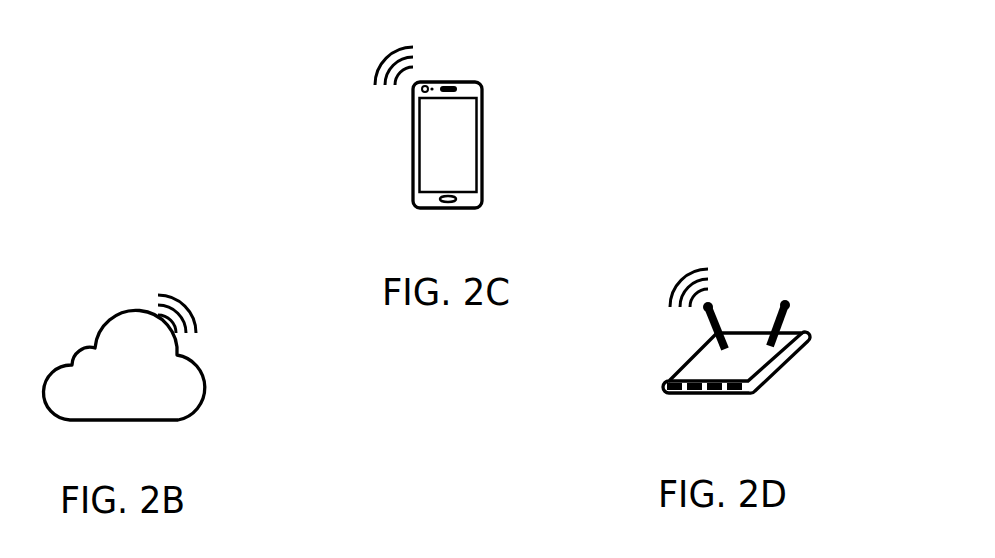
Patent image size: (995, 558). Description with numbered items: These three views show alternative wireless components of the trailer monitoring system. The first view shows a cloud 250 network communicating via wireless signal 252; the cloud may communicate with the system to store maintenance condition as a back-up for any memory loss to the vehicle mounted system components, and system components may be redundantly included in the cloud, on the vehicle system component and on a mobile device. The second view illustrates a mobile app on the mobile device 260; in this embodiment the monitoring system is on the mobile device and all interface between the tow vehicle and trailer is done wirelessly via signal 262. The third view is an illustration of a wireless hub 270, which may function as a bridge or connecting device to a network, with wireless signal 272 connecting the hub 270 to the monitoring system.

In FIG. 2B, the cloud network 250 is at (172, 388).
In FIG. 2B, the wireless signal 252 is at (180, 294).
In FIG. 2C, the mobile device 260 is at (458, 145).
In FIG. 2C, the wireless signal 262 is at (377, 80).
In FIG. 2D, the wireless hub 270 is at (782, 360).
In FIG. 2D, the wireless signal 272 is at (684, 277).